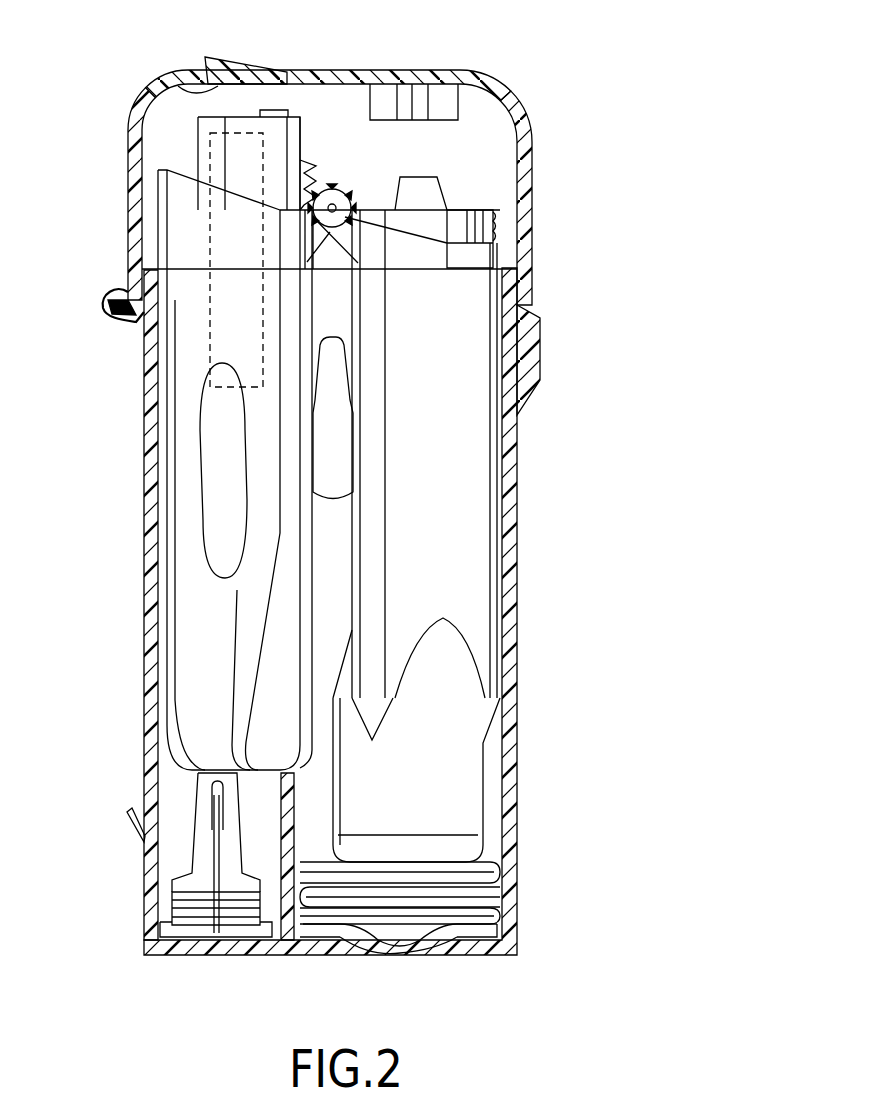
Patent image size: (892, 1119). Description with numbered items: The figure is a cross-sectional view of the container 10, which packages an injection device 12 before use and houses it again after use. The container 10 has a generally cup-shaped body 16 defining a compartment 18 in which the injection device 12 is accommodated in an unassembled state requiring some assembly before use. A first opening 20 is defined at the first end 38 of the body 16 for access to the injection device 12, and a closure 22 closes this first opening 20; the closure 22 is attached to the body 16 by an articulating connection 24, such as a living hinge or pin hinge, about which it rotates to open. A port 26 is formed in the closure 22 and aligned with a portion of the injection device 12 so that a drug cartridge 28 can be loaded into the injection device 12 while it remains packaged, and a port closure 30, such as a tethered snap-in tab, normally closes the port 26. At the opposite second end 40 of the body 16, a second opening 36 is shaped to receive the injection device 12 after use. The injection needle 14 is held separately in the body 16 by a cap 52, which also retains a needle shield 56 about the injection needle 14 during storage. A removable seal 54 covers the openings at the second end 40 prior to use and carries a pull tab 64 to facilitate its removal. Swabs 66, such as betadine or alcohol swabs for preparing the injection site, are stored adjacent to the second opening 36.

The container 10 is at (546, 85).
The injection device 12 is at (482, 494).
The injection needle 14 is at (220, 920).
The body 16 is at (145, 527).
The compartment 18 is at (449, 396).
The first opening 20 is at (430, 268).
The closure 22 is at (525, 163).
The articulating connection 24 is at (118, 295).
The port 26 is at (168, 90).
The drug cartridge 28 is at (230, 240).
The port closure 30 is at (250, 58).
The second opening 36 is at (457, 945).
The first end 38 is at (468, 262).
The second end 40 is at (492, 945).
The cap 52 is at (205, 828).
The removable seal 54 is at (322, 953).
The needle shield 56 is at (215, 868).
The pull tab 64 is at (130, 817).
The swabs 66 is at (490, 900).